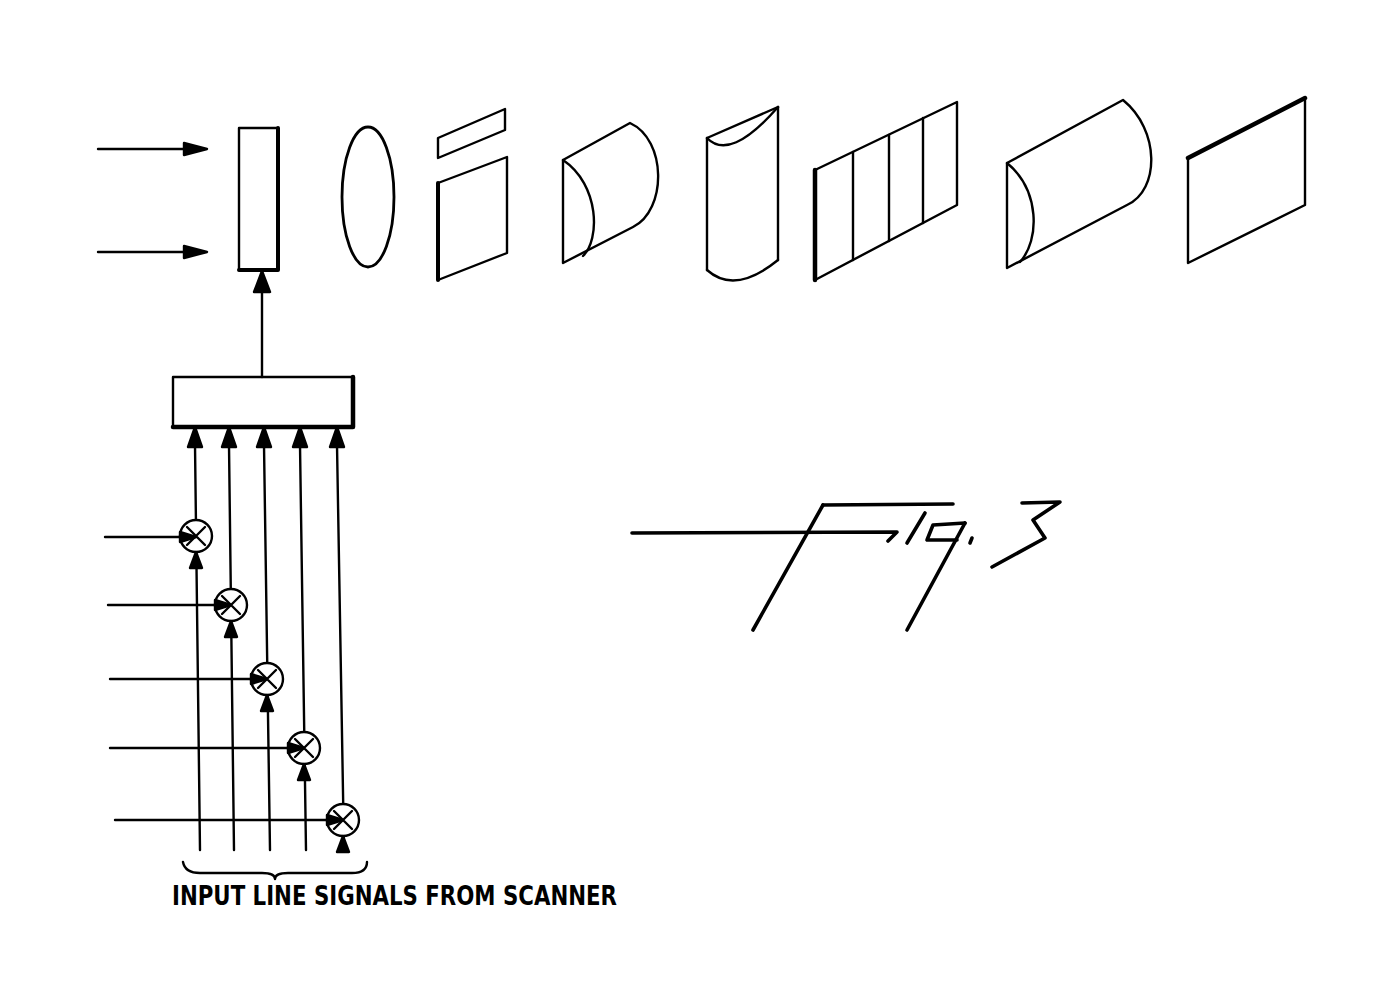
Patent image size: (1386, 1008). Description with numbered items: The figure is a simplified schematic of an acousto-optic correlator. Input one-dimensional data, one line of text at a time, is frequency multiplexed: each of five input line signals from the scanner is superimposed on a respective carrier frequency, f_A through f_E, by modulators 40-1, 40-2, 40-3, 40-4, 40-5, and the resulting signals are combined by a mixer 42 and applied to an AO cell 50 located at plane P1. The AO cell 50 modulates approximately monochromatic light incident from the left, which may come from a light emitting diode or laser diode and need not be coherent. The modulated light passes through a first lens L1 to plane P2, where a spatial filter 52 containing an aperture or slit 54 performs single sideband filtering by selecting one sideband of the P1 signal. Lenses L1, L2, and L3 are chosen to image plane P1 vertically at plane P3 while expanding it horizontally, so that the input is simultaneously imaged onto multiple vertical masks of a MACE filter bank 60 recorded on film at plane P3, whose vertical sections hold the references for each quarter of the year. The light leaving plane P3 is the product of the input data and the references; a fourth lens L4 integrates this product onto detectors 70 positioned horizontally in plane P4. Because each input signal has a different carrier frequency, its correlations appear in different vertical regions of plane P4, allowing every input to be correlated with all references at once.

The AO cell 50 is at (237, 223).
The input plane P1 is at (272, 272).
The first lens L1 is at (360, 268).
The spatial filter 52 is at (489, 251).
The spatial filter plane P2 is at (440, 272).
The aperture or slit 54 is at (505, 140).
The second lens L2 is at (590, 253).
The third lens L3 is at (778, 265).
The MACE filter bank 60 is at (920, 186).
The reference plane P3 is at (882, 250).
The fourth lens L4 is at (1063, 240).
The detectors 70 is at (1287, 200).
The detector plane P4 is at (1243, 238).
The mixer 42 is at (355, 402).
The modulator 40-1 is at (185, 525).
The modulator 40-2 is at (219, 594).
The modulator 40-3 is at (282, 668).
The modulator 40-4 is at (320, 737).
The modulator 40-5 is at (360, 815).